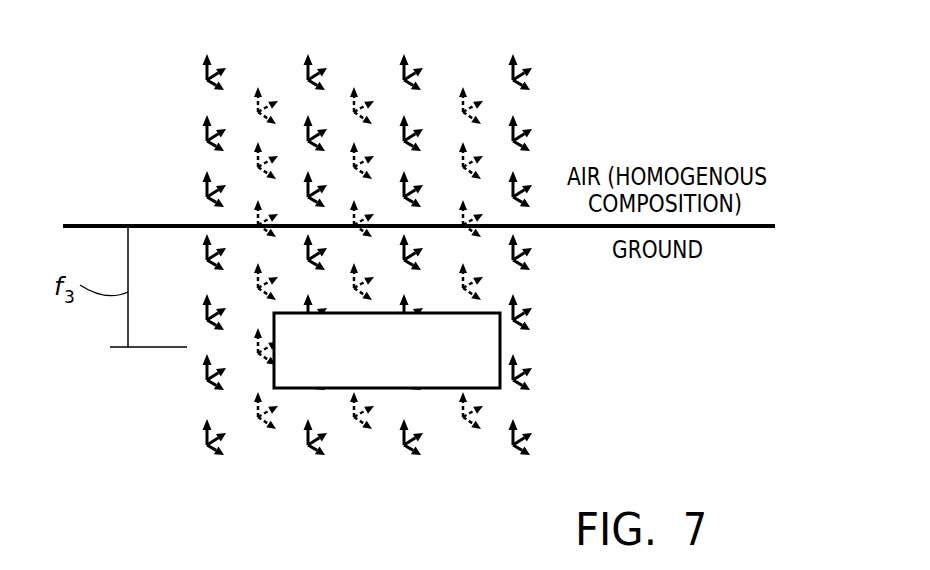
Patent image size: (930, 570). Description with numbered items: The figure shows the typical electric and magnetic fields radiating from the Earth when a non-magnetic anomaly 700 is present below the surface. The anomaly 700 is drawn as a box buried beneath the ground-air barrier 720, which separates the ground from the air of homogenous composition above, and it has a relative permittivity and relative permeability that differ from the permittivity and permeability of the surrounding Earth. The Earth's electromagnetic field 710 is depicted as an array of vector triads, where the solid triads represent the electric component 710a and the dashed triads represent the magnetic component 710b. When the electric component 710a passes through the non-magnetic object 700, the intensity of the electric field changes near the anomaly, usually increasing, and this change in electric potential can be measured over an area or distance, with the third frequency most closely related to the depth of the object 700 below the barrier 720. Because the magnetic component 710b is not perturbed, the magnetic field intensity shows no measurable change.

The non-magnetic anomaly 700 is at (387, 350).
The electromagnetic field 710 is at (197, 462).
The electric component 710a is at (196, 68).
The magnetic component 710b is at (278, 68).
The ground-air barrier 720 is at (396, 226).